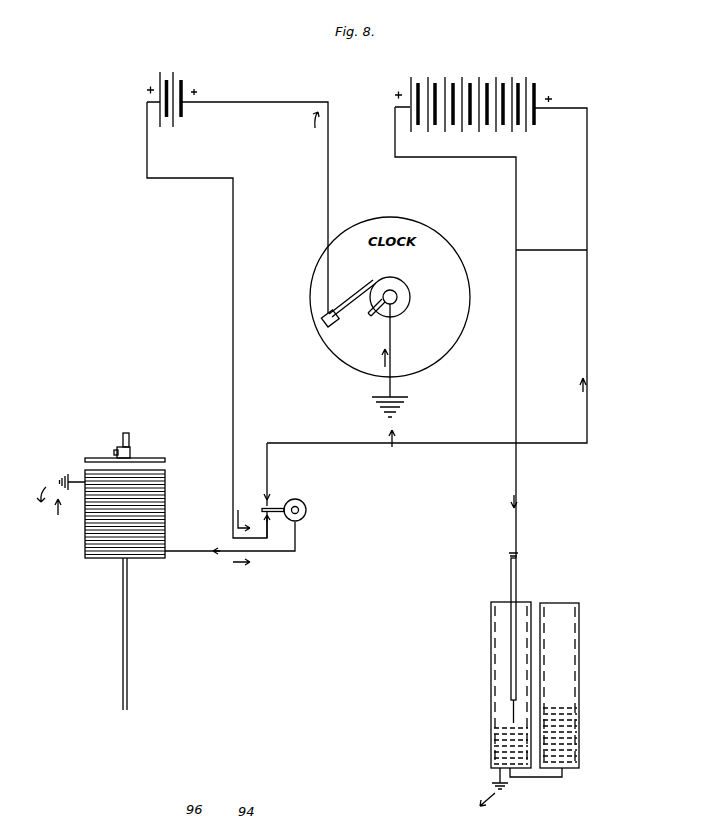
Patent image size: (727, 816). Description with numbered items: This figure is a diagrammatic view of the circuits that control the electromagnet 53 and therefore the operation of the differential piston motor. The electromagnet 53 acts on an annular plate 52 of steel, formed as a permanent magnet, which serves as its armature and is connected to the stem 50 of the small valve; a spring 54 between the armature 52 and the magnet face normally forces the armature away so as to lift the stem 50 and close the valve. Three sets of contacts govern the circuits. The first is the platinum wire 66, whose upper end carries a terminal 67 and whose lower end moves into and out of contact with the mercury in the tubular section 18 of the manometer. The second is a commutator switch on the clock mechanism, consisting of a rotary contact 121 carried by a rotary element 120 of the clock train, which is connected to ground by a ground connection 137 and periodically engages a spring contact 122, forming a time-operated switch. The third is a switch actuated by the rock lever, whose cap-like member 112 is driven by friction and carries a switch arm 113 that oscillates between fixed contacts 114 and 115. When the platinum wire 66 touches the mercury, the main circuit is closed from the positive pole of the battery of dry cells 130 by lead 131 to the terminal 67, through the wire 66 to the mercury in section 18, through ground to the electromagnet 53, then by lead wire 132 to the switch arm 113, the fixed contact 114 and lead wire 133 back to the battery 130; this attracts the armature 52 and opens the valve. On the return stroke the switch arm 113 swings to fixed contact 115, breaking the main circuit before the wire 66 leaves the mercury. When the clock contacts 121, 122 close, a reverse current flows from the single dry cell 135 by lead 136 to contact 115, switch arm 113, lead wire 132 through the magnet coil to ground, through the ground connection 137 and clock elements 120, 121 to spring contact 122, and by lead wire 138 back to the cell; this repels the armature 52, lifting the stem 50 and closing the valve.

The single dry cell 135 is at (184, 83).
The battery of dry cells 130 is at (485, 91).
The lead wire 138 is at (283, 102).
The lead 136 is at (236, 390).
The lead wire 133 is at (437, 445).
The lead 131 is at (583, 250).
The rotary element 120 is at (406, 292).
The spring contact 122 is at (349, 292).
The rotary contact 121 is at (373, 319).
The ground conductor 137 is at (393, 347).
The electromagnet 53 is at (89, 524).
The annular plate 52 is at (160, 459).
The spring 54 is at (138, 462).
The stem 50 is at (128, 644).
The lead wire 132 is at (280, 552).
The cap-like member 112 is at (307, 506).
The fixed contact member 114 is at (271, 505).
The switch arm 113 is at (265, 500).
The fixed contact member 115 is at (270, 520).
The tubular section of the manometer 18 is at (497, 689).
The platinum wire 66 is at (508, 712).
The terminal 67 is at (519, 551).